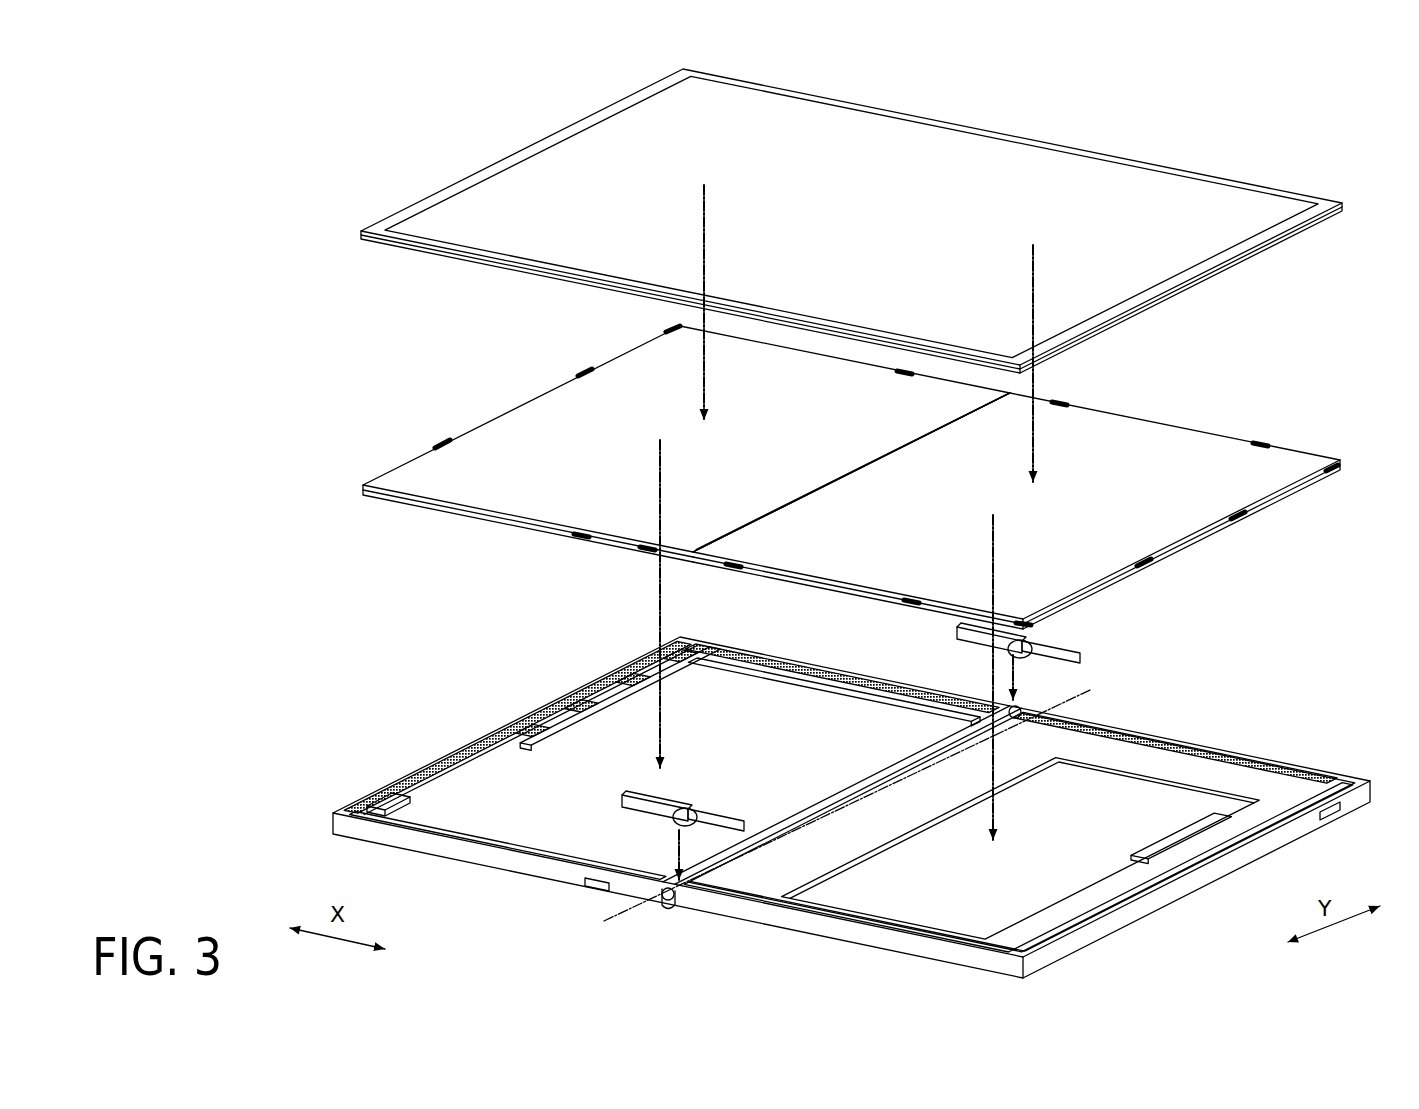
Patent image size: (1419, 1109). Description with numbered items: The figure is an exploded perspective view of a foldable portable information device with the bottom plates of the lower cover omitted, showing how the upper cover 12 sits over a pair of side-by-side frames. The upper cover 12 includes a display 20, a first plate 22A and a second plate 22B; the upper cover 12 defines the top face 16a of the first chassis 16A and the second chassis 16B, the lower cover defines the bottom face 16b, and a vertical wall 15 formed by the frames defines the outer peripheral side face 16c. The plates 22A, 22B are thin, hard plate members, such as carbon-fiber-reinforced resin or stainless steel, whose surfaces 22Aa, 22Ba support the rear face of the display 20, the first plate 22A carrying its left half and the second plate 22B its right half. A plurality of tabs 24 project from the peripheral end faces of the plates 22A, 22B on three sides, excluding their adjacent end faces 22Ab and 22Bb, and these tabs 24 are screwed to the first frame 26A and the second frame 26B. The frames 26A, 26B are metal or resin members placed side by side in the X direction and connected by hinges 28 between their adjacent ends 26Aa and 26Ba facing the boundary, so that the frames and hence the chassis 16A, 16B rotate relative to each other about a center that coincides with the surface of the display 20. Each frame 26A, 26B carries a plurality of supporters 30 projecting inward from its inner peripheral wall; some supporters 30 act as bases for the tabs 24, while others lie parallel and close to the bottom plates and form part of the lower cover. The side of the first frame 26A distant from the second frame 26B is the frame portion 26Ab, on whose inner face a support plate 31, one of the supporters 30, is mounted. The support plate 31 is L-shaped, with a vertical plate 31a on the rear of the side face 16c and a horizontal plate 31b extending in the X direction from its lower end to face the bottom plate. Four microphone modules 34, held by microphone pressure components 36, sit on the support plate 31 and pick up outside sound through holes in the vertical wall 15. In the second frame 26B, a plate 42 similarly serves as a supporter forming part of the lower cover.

The upper cover 12 is at (851, 221).
The display 20 is at (851, 221).
The top face 16a is at (520, 210).
The first plate 22A is at (686, 441).
The surface 22Aa is at (570, 460).
The adjacent end face 22Ab is at (835, 495).
The second plate 22B is at (1016, 486).
The surface 22Ba is at (1160, 485).
The adjacent end face 22Bb is at (850, 515).
The tab 24 is at (650, 330).
The hinge 28 is at (710, 800).
The vertical wall 15 is at (827, 789).
The first chassis 16A is at (671, 769).
The second chassis 16B is at (1021, 821).
The bottom face 16b is at (612, 740).
The outer peripheral side face 16c is at (338, 840).
The first frame 26A is at (671, 753).
The adjacent end 26Aa is at (1090, 715).
The frame portion 26Ab is at (671, 702).
The second frame 26B is at (1021, 812).
The adjacent end 26Ba is at (668, 905).
The supporter 30 is at (848, 680).
The support plate 31 is at (671, 702).
The plate 31a is at (478, 740).
The plate 31b is at (535, 752).
The microphone module 34 is at (591, 678).
The microphone pressure component 36 is at (630, 675).
The plate 42 is at (1185, 850).